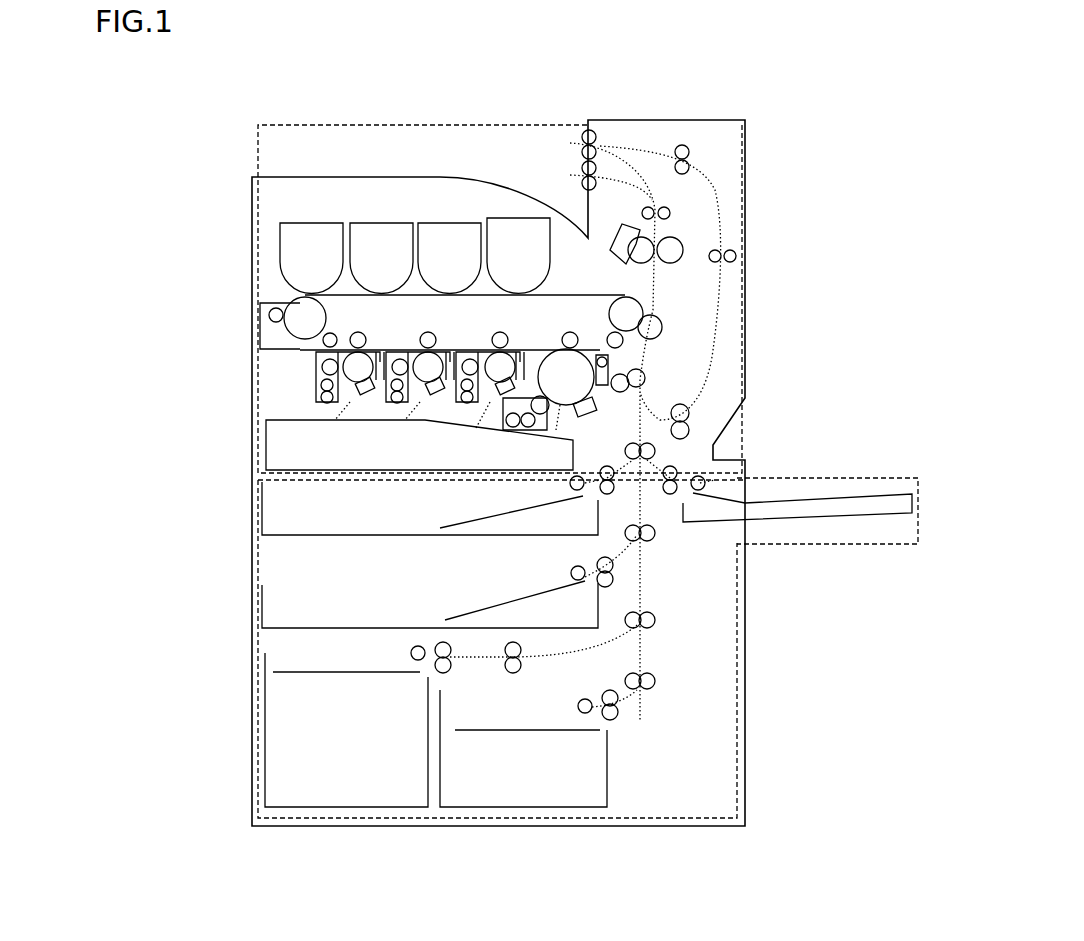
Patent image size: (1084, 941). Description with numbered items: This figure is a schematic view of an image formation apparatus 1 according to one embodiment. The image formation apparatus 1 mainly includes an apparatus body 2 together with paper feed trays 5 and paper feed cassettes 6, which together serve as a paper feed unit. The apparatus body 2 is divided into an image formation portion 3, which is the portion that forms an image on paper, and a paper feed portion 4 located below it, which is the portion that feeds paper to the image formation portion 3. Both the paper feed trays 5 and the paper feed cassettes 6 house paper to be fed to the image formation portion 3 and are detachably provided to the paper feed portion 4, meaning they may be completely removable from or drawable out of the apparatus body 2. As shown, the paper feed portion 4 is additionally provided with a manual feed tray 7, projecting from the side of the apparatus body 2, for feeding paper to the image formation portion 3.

The image formation apparatus 1 is at (818, 125).
The apparatus body 2 is at (745, 183).
The image formation portion 3 is at (258, 240).
The paper feed portion 4 is at (258, 773).
The paper feed tray 5 is at (262, 513).
The paper feed cassette 6 is at (343, 808).
The manual feed tray 7 is at (828, 497).